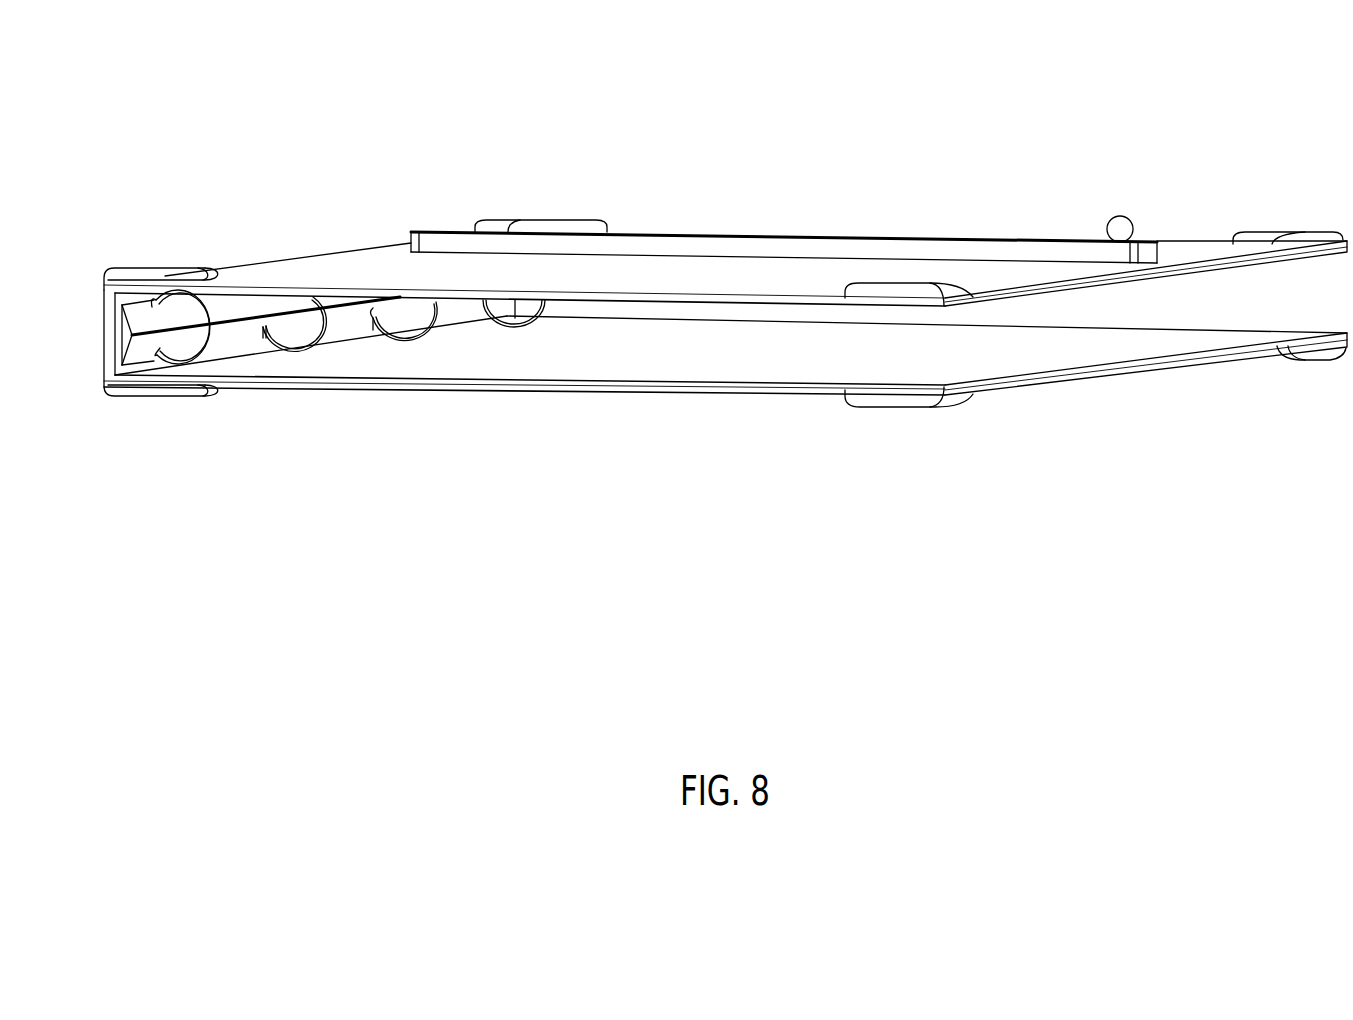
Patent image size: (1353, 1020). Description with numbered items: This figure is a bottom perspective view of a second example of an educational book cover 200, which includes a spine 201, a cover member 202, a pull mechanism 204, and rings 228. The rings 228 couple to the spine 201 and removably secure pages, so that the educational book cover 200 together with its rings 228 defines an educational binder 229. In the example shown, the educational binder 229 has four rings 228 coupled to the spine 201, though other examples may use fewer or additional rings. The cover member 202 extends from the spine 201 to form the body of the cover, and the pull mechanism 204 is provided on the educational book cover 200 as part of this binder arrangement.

The educational book cover 200 is at (1063, 126).
The spine 201 is at (110, 337).
The cover member 202 is at (1192, 253).
The pull mechanism 204 is at (1137, 209).
The rings 228 is at (316, 357).
The educational binder 229 is at (959, 200).